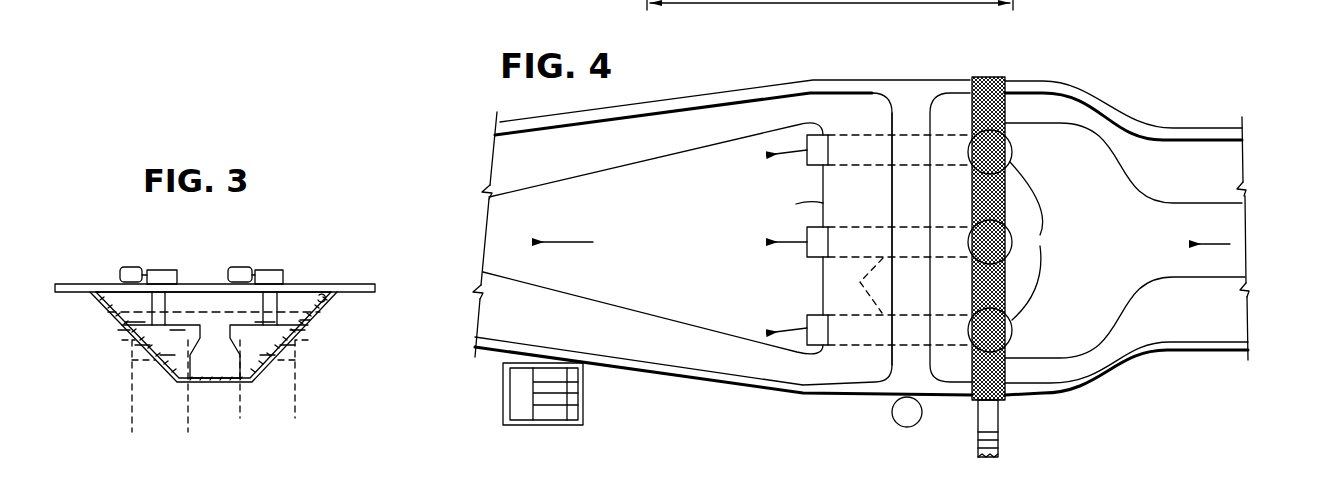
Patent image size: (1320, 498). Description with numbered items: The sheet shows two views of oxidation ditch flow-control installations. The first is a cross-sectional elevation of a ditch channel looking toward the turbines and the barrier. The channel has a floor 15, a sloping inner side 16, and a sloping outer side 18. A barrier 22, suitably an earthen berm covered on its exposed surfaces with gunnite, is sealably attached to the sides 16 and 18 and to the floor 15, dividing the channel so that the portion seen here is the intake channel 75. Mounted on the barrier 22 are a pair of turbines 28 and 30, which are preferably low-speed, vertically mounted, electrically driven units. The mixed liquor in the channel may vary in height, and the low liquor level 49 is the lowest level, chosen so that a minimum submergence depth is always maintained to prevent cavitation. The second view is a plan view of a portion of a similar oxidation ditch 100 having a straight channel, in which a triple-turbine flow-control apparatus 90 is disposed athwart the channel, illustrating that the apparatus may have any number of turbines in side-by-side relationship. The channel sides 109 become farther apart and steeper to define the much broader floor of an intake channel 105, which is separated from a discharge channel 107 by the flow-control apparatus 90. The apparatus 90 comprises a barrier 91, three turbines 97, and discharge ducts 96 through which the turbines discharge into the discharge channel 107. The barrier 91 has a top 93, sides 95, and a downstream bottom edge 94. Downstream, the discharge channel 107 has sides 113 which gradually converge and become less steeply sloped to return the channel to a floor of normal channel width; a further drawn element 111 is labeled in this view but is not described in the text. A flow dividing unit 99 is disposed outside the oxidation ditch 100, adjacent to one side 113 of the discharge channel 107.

In FIG. 3, the floor 15 is at (197, 372).
In FIG. 3, the sloping inner side 16 is at (113, 302).
In FIG. 3, the sloping outer side 18 is at (322, 298).
In FIG. 3, the barrier 22 is at (240, 297).
In FIG. 3, the turbine 28 is at (167, 270).
In FIG. 3, the turbine 30 is at (284, 272).
In FIG. 3, the low liquor level 49 is at (183, 307).
In FIG. 3, the intake channel 75 is at (228, 360).
In FIG. 4, the flow-control apparatus 90 is at (975, 62).
In FIG. 4, the barrier 91 is at (900, 78).
In FIG. 4, the top 93 is at (922, 203).
In FIG. 4, the downstream bottom edge 94 is at (1028, 54).
In FIG. 4, the sides 95 is at (868, 203).
In FIG. 4, the discharge ducts 96 is at (814, 164).
In FIG. 4, the turbines 97 is at (1012, 238).
In FIG. 4, the flow dividing unit 99 is at (572, 413).
In FIG. 4, the oxidation ditch 100 is at (1250, 122).
In FIG. 4, the intake channel 105 is at (1117, 263).
In FIG. 4, the discharge channel 107 is at (722, 256).
In FIG. 4, the sides 109 is at (1240, 167).
In FIG. 4, the partition wall 111 is at (1035, 103).
In FIG. 4, the sides 113 is at (607, 156).